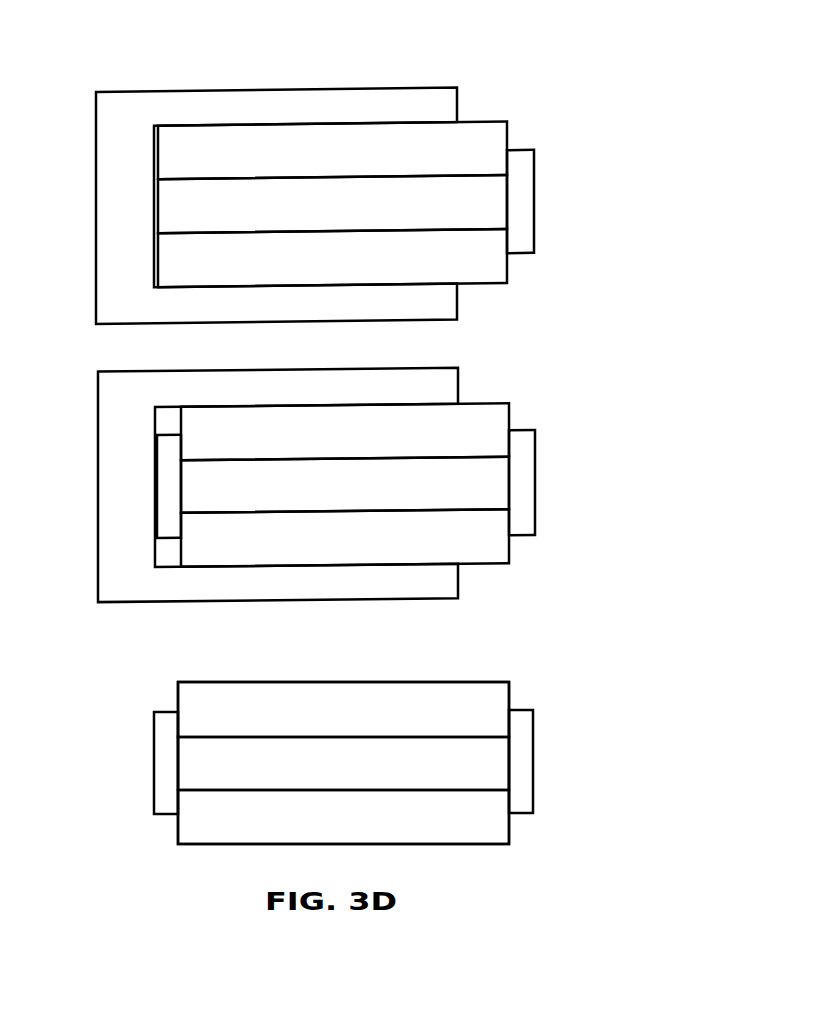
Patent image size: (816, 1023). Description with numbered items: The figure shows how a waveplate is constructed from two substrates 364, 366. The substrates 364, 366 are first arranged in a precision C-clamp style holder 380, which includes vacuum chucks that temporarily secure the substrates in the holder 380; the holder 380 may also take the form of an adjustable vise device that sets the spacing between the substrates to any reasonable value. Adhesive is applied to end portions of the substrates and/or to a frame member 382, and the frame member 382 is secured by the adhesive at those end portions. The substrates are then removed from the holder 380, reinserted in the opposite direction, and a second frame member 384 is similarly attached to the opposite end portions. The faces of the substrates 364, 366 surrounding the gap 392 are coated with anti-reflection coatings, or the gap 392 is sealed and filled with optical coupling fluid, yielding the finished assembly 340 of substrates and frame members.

The electrochemical cell / capacitor assembly 340 is at (544, 651).
The substrate 364 is at (462, 164).
The substrate 366 is at (462, 274).
The precision C-clamp style holder 380 is at (128, 104).
The frame member 382 is at (525, 171).
The second frame member 384 is at (528, 451).
The gap 392 is at (272, 775).